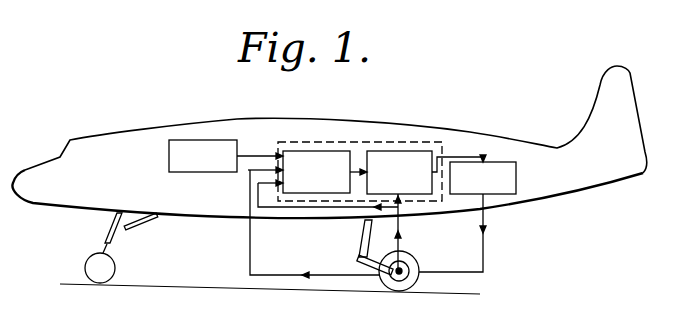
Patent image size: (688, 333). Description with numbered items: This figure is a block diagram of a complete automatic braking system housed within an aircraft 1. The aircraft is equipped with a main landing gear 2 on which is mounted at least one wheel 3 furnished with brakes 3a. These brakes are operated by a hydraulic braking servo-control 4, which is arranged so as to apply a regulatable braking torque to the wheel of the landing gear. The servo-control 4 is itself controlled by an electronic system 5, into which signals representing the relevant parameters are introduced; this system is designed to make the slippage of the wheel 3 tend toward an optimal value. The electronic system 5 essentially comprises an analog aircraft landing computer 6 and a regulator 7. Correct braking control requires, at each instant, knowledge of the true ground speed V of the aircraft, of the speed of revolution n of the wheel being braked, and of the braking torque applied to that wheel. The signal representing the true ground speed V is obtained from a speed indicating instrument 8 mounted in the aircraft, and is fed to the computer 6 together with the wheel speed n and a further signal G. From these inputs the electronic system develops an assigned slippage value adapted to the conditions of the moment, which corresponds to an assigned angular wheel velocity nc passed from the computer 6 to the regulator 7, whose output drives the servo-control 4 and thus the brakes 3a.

The aircraft 1 is at (237, 127).
The main landing gear 2 is at (363, 235).
The wheel 3 is at (408, 287).
The brakes 3a is at (416, 264).
The hydraulic braking servo-control 4 is at (516, 173).
The electronic system 5 is at (393, 142).
The analog aircraft landing computer 6 is at (343, 151).
The regulator 7 is at (439, 155).
The speed indicating instrument 8 is at (169, 148).
The true ground speed V is at (262, 156).
The deceleration signal G is at (248, 170).
The speed of revolution of the wheel n is at (258, 183).
The assigned angular wheel velocity nc is at (357, 171).